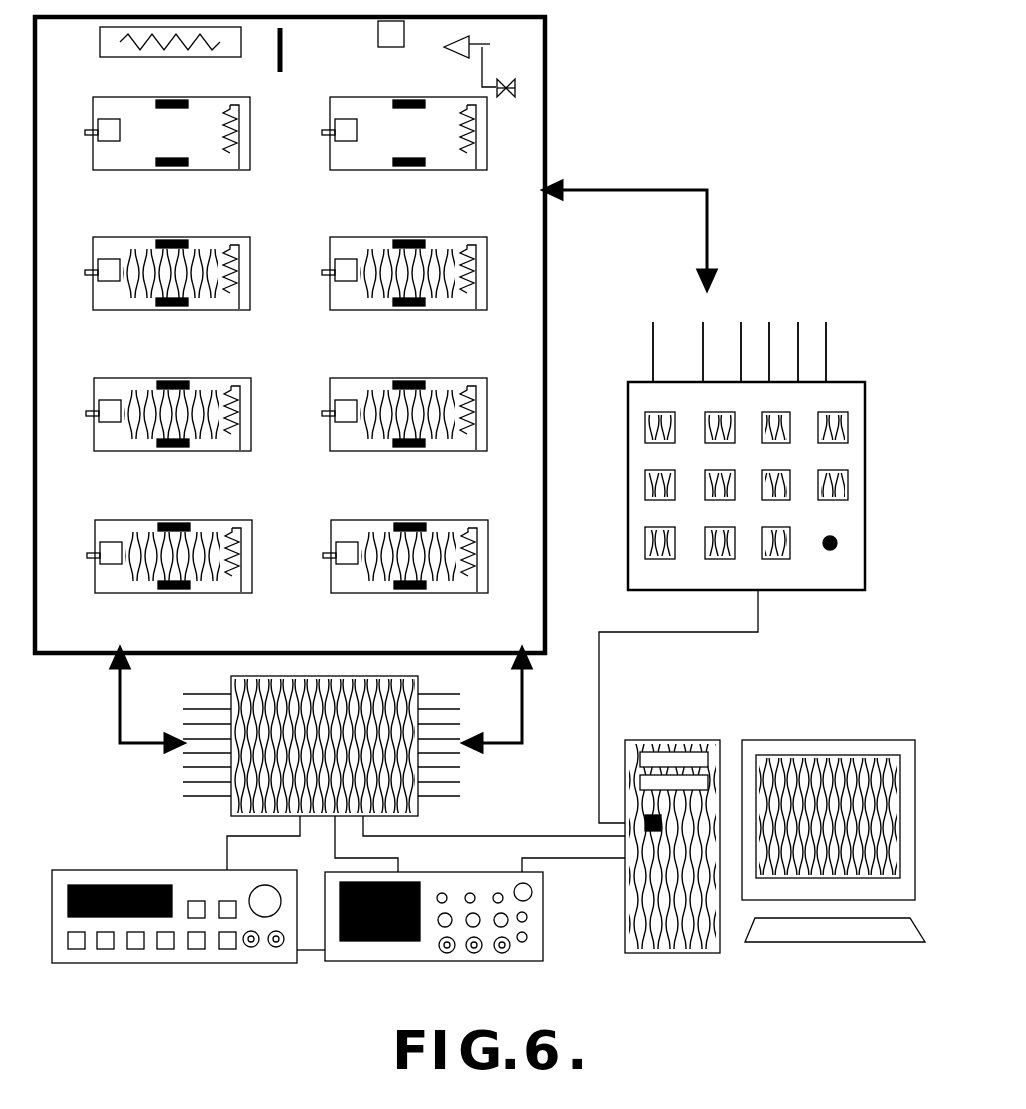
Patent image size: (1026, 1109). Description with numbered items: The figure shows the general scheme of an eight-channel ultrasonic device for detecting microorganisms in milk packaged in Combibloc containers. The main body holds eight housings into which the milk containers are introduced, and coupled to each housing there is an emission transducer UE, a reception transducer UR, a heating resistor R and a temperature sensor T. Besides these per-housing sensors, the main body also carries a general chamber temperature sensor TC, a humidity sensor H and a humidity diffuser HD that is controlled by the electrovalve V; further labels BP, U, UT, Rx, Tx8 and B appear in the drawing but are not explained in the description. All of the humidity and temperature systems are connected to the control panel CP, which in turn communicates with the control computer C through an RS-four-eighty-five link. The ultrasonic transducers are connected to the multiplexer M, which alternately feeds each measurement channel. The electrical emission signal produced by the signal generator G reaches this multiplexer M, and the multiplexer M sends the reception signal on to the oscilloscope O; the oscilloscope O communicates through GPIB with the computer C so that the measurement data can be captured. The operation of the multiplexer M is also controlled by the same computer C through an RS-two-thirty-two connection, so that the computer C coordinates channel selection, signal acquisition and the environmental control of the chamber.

The band-pass filter BP is at (100, 42).
The general chamber temperature sensor TC is at (288, 47).
The humidity sensor H is at (391, 40).
The humidity diffuser HD is at (479, 61).
The electrovalve V is at (515, 92).
The temperature sensor T is at (414, 334).
The emission transducer UE is at (419, 85).
The lower electrode U is at (300, 392).
The heating resistor R is at (370, 348).
The control panel CP is at (628, 558).
The receive pin Rx is at (629, 319).
The transmit pins Tx8 is at (683, 319).
The bias pin B is at (720, 319).
The multiplexer M is at (347, 743).
The reception transducer UR is at (192, 745).
The transmit lines UT is at (454, 745).
The signal generator G is at (145, 875).
The oscilloscope O is at (438, 878).
The control computer C is at (722, 735).